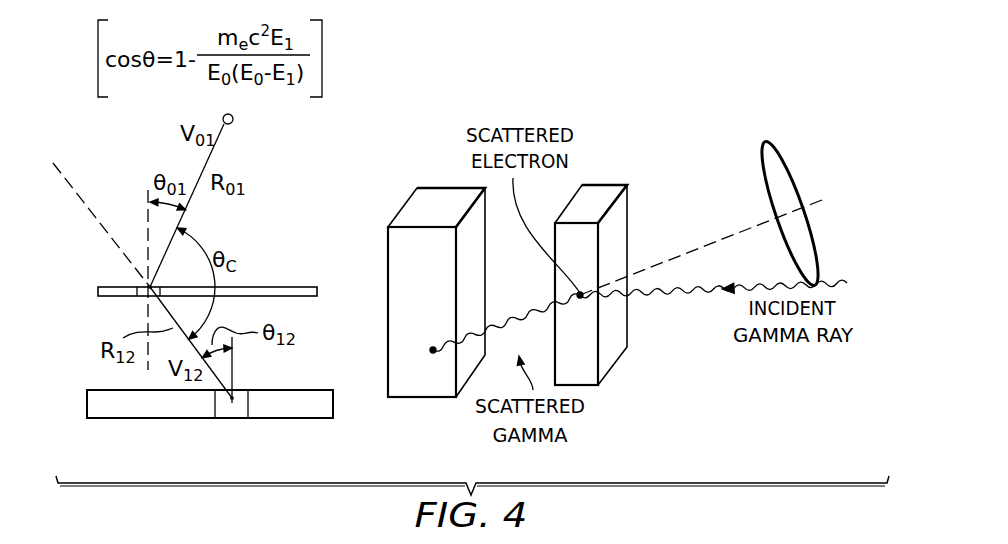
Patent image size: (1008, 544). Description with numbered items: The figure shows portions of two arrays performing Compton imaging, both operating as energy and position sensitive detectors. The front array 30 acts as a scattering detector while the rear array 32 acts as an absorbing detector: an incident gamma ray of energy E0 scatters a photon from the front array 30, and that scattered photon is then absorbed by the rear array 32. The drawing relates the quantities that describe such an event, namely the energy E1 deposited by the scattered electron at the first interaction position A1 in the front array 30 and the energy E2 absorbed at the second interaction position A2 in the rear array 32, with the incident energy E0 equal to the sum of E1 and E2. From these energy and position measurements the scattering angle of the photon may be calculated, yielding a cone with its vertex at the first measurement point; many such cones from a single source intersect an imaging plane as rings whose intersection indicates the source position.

The front array 30 is at (287, 287).
The rear array 32 is at (133, 420).
The incident gamma ray energy / source point E0 is at (549, 204).
The first energy measurement E1 is at (381, 294).
The second energy measurement E2 is at (341, 368).
The first position measurement A1 is at (136, 306).
The second position measurement A2 is at (218, 422).